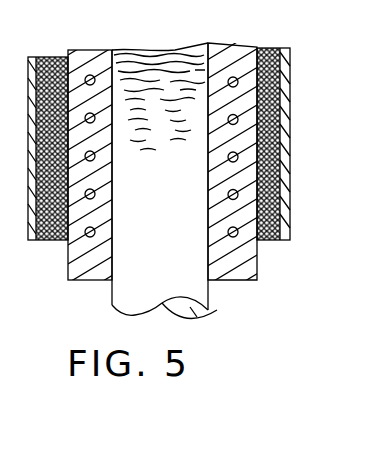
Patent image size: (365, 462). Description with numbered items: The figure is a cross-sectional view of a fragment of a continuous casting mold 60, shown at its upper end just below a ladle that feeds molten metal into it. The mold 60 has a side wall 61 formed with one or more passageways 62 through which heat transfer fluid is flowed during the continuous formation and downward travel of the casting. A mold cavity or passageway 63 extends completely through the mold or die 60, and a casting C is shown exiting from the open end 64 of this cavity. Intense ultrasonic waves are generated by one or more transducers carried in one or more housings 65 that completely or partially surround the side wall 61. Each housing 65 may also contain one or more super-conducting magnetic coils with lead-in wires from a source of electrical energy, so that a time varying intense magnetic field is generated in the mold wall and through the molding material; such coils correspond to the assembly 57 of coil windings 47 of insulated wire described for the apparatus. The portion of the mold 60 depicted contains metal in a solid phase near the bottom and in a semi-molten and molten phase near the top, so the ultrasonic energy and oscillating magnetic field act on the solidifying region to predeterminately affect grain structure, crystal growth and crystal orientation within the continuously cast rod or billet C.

The coil windings 47 is at (40, 80).
The assembly 57 is at (6, 318).
The continuous casting mold 60 is at (232, 45).
The side wall 61 is at (76, 50).
The passageways 62 is at (91, 75).
The mold cavity or passageway 63 is at (144, 50).
The open end 64 is at (110, 283).
The housings 65 is at (60, 240).
The casting C is at (213, 318).